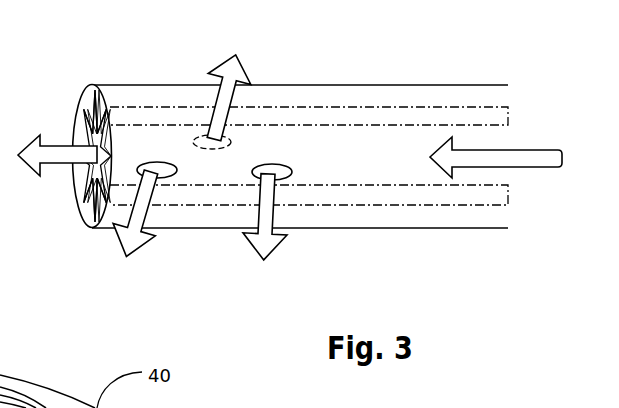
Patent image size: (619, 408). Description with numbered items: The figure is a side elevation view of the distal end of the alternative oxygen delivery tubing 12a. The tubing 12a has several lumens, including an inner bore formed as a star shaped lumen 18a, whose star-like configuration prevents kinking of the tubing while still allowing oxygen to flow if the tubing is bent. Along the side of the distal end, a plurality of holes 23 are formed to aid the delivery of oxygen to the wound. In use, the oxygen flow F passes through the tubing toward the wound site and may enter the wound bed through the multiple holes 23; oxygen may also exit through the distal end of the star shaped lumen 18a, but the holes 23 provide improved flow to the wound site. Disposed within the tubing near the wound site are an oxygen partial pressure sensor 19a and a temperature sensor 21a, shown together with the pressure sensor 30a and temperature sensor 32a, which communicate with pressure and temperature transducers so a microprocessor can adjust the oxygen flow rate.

The tubing 12a is at (465, 230).
The pressure sensor 30a is at (350, 126).
The temperature sensor 32a is at (313, 208).
The star shaped lumen 18a is at (83, 138).
The temperature sensor 21a is at (97, 110).
The oxygen partial pressure sensor 19a is at (90, 208).
The holes 23 is at (268, 163).
The oxygen flow F is at (532, 150).